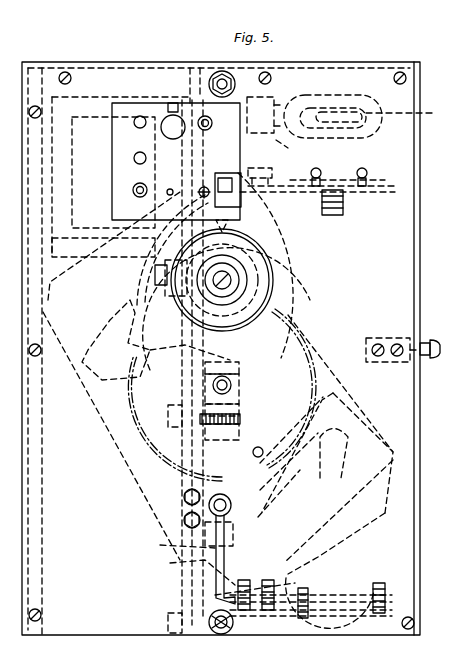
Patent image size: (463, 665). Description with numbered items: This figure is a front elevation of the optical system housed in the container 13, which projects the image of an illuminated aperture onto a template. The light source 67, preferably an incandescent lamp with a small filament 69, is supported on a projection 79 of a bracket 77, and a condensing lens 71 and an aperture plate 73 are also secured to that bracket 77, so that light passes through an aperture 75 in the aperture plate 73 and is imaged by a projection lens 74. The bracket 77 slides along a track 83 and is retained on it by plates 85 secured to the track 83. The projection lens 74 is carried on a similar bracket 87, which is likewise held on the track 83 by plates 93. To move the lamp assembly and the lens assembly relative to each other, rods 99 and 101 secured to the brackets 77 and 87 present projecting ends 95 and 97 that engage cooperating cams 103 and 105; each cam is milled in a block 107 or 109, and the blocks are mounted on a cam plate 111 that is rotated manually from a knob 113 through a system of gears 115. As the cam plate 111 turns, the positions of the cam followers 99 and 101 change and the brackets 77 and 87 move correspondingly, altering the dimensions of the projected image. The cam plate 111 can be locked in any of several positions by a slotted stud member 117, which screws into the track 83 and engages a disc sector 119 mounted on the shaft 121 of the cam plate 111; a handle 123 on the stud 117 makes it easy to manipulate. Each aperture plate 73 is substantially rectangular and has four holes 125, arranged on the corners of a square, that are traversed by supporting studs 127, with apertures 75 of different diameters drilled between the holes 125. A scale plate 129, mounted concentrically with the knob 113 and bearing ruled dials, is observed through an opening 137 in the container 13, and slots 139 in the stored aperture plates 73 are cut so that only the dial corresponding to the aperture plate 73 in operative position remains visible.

The container 13 is at (422, 388).
The light source 67 is at (340, 95).
The filament 69 is at (408, 113).
The condensing lens 71 is at (340, 180).
The aperture plate 73 is at (222, 71).
The projection lens 74 is at (328, 626).
The aperture 75 is at (160, 128).
The bracket 77 is at (276, 186).
The projection 79 is at (290, 148).
The track 83 is at (196, 638).
The plates 85 is at (228, 350).
The bracket 87 is at (283, 583).
The plates 93 is at (215, 411).
The projecting end 95 is at (290, 240).
The projecting end 97 is at (205, 547).
The rod 99 is at (247, 228).
The rod 101 is at (182, 561).
The cam 103 is at (112, 314).
The cam 105 is at (322, 490).
The block 107 is at (112, 330).
The block 109 is at (376, 452).
The cam plate 111 is at (328, 330).
The knob 113 is at (247, 296).
The system of gears 115 is at (237, 286).
The slotted stud member 117 is at (232, 505).
The disc sector 119 is at (182, 490).
The shaft 121 is at (233, 389).
The handle 123 is at (226, 565).
The holes 125 is at (202, 114).
The studs 127 is at (207, 131).
The plate 129 is at (297, 263).
The opening 137 is at (278, 195).
The slots 139 is at (226, 176).